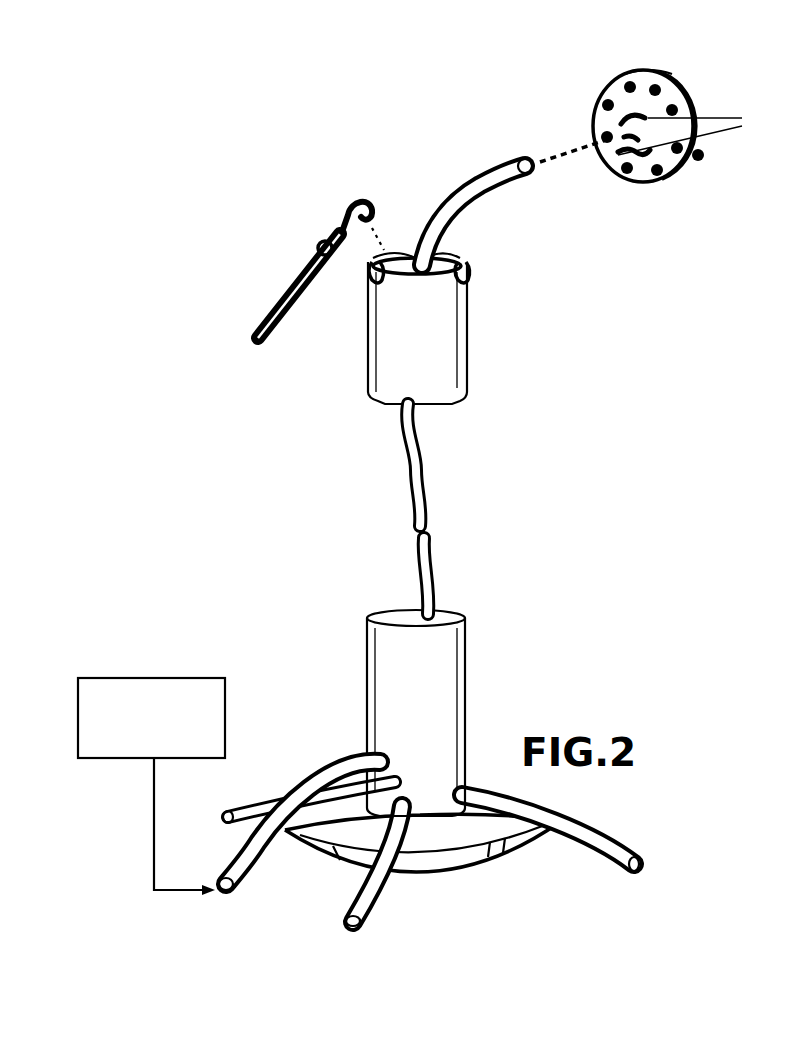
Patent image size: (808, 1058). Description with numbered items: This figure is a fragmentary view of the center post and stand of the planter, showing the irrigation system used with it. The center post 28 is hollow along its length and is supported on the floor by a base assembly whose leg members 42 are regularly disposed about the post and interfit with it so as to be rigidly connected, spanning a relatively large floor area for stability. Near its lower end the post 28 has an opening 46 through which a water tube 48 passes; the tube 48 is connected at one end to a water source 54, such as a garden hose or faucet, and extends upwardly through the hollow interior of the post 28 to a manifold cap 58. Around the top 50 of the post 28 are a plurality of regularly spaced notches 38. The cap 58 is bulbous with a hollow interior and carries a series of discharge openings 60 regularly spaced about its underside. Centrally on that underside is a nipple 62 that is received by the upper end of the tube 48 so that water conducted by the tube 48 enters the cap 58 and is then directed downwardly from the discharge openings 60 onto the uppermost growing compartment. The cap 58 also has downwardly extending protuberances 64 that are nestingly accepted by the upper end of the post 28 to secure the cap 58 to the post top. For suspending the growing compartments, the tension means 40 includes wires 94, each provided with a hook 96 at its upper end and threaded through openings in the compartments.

The center post 28 is at (435, 362).
The notches 38 is at (370, 280).
The tension means 40 is at (275, 225).
The leg members 42 is at (320, 780).
The opening 46 is at (487, 172).
The water tube 48 is at (430, 558).
The top of the post 50 is at (470, 258).
The water source 54 is at (180, 678).
The manifold cap 58 is at (700, 150).
The discharge openings 60 is at (606, 102).
The nipple 62 is at (603, 153).
The protuberances 64 is at (742, 124).
The wires 94 is at (290, 290).
The hook 96 is at (353, 214).